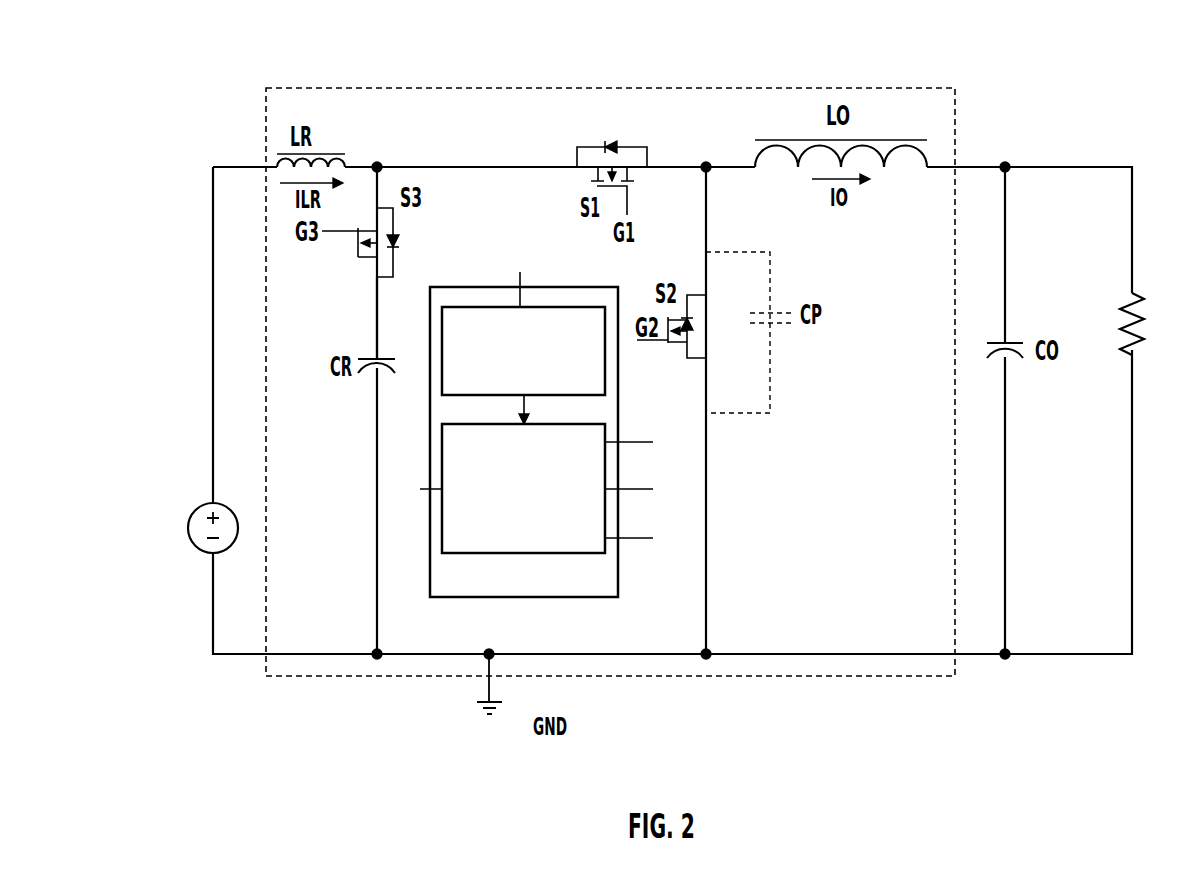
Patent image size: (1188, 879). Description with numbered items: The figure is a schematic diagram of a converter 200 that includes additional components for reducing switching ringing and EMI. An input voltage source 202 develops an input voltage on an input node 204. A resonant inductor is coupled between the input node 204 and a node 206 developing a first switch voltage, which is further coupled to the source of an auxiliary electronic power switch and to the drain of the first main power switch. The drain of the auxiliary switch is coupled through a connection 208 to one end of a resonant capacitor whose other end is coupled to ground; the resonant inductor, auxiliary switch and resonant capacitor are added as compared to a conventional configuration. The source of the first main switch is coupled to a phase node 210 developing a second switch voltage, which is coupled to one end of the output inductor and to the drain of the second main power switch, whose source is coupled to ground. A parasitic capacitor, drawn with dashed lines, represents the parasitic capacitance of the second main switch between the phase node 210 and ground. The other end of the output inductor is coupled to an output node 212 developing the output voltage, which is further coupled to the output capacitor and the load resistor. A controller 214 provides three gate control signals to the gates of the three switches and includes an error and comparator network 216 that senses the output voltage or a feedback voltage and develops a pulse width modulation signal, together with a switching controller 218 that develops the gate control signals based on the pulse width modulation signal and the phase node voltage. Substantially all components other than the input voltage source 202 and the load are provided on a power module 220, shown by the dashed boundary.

The converter 200 is at (670, 780).
The input voltage source 202 is at (203, 551).
The input node 204 is at (250, 165).
The node 206 is at (456, 166).
The resonant branch node 208 is at (377, 312).
The phase node 210 is at (706, 172).
The output node 212 is at (1005, 172).
The controller 214 is at (535, 597).
The error and comparator network 216 is at (538, 388).
The switching controller 218 is at (538, 531).
The power module 220 is at (480, 87).